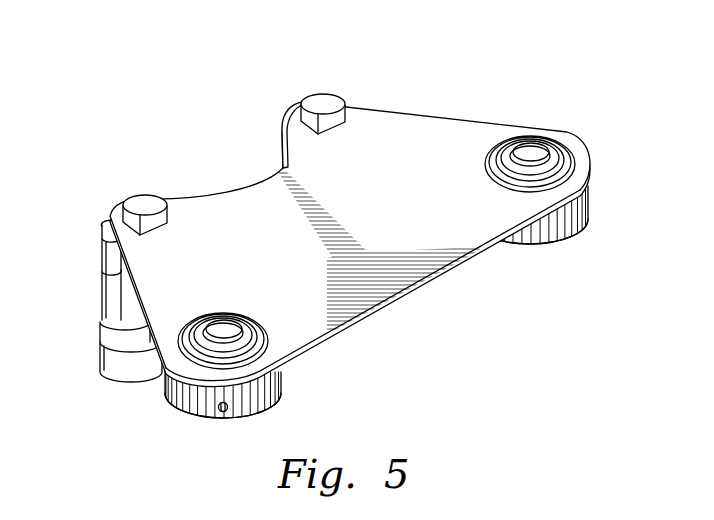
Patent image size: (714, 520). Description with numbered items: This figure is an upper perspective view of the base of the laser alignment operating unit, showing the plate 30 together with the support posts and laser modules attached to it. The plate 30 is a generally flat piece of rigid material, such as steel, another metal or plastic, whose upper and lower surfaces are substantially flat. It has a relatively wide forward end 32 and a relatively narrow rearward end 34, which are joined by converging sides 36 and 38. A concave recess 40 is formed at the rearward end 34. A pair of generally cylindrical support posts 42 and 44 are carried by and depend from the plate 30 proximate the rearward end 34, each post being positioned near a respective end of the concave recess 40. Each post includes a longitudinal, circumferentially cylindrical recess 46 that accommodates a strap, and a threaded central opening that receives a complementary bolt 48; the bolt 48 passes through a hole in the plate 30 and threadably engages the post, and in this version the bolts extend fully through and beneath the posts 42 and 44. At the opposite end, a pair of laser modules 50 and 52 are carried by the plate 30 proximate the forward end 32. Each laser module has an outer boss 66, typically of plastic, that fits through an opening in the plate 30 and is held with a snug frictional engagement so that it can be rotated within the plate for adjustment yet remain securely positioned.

The plate 30 is at (350, 218).
The forward end 32 is at (418, 287).
The rearward end 34 is at (292, 112).
The converging side 36 is at (138, 296).
The converging side 38 is at (450, 116).
The concave recess 40 is at (205, 203).
The support post 42 is at (103, 340).
The support post 44 is at (280, 165).
The cylindrical recess 46 is at (106, 273).
The bolt 48 is at (135, 198).
The laser module 50 is at (188, 407).
The laser module 52 is at (548, 243).
The outer boss 66 is at (282, 396).